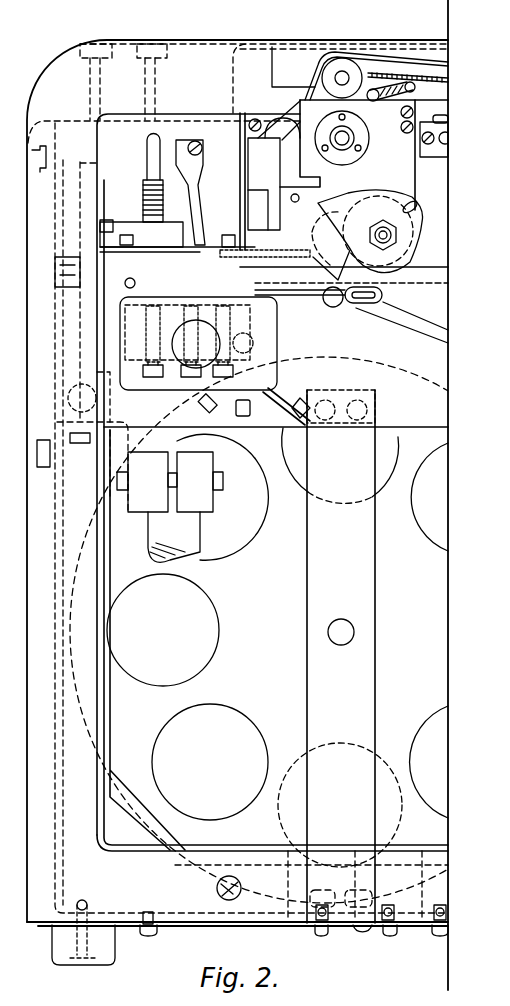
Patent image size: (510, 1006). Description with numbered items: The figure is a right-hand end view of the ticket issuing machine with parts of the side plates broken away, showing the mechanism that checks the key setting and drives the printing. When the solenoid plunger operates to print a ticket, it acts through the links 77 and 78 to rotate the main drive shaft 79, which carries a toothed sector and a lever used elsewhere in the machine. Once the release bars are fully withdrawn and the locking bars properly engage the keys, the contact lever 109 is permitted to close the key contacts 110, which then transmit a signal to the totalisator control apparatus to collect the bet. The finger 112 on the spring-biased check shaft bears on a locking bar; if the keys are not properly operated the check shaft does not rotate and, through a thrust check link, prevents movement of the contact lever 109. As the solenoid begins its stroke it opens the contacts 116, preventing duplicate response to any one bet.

The link 77 is at (426, 318).
The link 78 is at (367, 235).
The main drive shaft 79 is at (385, 220).
The contact lever 109 is at (270, 298).
The key contacts 110 is at (318, 300).
The finger 112 is at (150, 322).
The contacts 116 is at (228, 326).